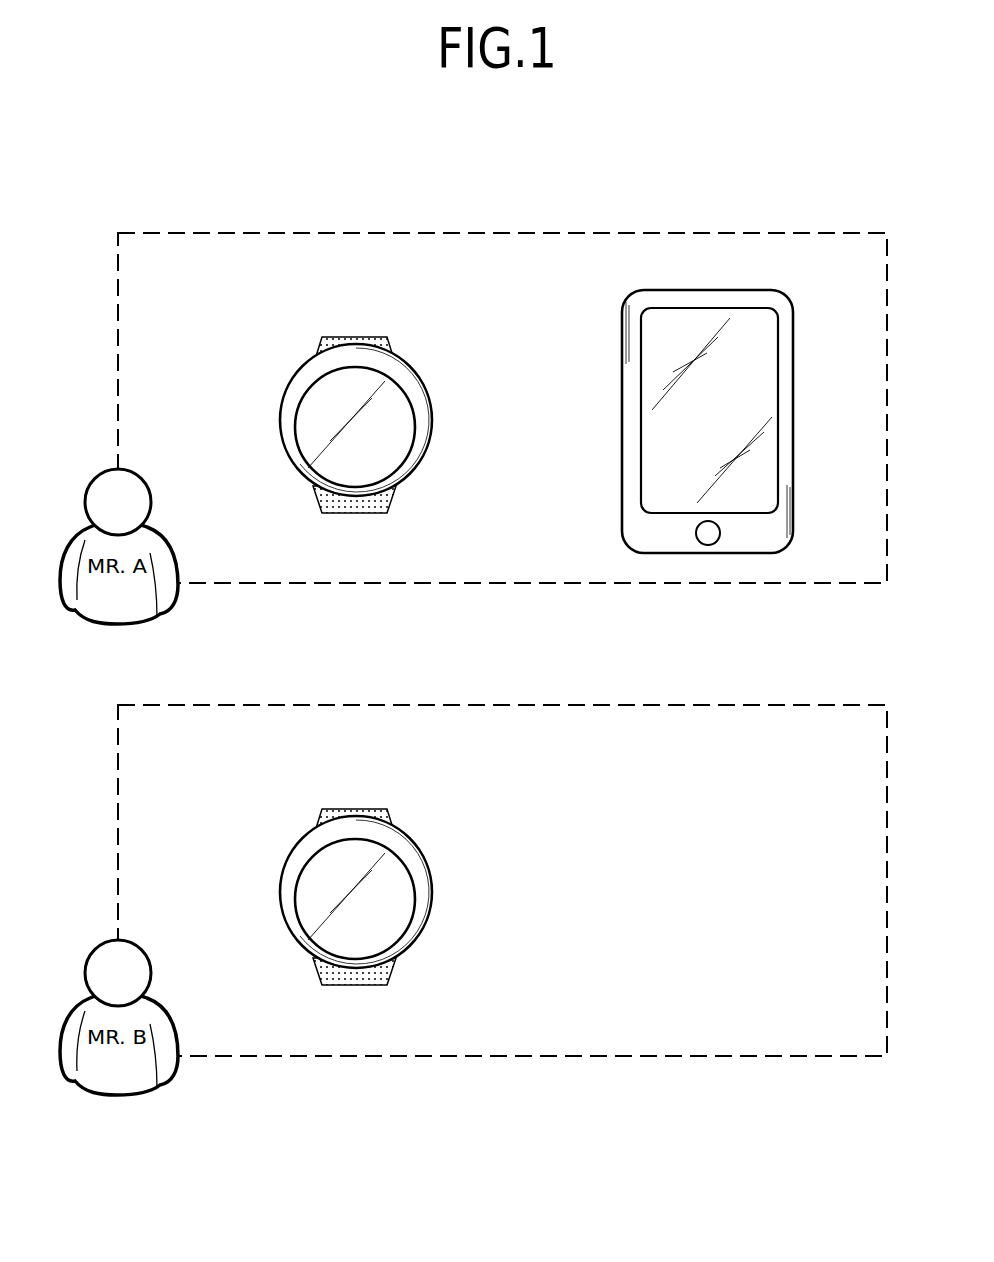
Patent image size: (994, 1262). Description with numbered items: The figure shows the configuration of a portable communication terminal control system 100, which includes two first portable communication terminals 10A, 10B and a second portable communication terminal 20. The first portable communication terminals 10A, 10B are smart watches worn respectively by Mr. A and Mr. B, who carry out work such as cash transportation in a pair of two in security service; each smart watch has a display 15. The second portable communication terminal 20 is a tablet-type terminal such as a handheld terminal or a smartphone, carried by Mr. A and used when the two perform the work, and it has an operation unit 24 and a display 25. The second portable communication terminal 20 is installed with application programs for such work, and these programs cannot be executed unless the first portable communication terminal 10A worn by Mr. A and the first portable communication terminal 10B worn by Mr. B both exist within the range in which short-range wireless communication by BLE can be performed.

The portable communication terminal control system 100 is at (636, 178).
The first portable communication terminal 10A is at (355, 337).
The first portable communication terminal 10B is at (355, 809).
The display 15 is at (412, 410).
The second portable communication terminal 20 is at (710, 290).
The display 25 is at (778, 352).
The operation unit 24 is at (722, 535).